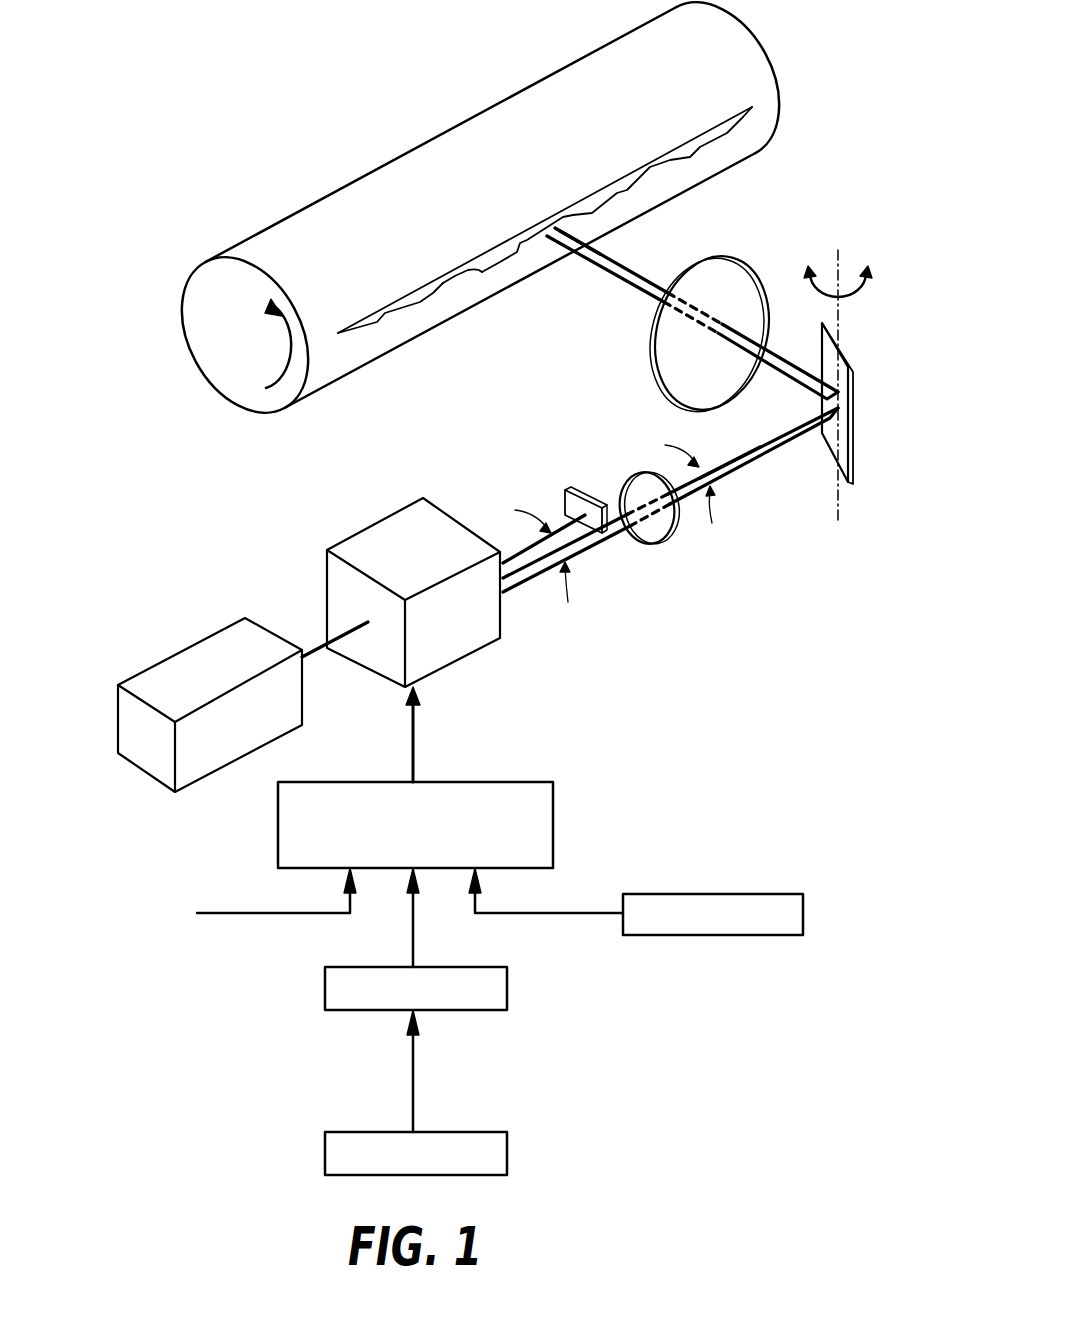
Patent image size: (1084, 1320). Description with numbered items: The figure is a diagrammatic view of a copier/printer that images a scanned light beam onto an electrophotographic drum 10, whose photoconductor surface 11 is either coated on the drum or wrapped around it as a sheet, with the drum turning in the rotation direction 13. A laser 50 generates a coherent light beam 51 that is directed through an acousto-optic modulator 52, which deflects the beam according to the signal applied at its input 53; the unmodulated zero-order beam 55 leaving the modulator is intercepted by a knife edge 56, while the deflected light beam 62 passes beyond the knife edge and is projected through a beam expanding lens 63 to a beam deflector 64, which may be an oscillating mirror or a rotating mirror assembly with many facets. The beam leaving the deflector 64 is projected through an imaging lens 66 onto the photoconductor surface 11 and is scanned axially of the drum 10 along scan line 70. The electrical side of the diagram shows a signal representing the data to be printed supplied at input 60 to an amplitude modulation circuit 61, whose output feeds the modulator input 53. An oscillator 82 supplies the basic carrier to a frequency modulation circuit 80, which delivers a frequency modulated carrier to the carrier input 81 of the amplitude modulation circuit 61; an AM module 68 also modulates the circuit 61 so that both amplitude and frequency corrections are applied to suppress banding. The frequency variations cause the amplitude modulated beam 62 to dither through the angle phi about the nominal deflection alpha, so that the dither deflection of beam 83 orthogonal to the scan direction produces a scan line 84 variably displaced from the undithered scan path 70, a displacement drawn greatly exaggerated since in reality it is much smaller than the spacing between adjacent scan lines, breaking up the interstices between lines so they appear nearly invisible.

The electrophotographic drum 10 is at (188, 277).
The photoconductor surface 11 is at (498, 113).
The rotation direction 13 is at (287, 362).
The scan line 70 is at (412, 293).
The scan line 84 is at (483, 272).
The beam 83 is at (612, 272).
The deflected light beam 62 is at (627, 268).
The imaging lens 66 is at (733, 262).
The beam deflector 64 is at (855, 420).
The oscillator 82 is at (733, 467).
The beam expanding lens 63 is at (637, 470).
The knife edge 56 is at (570, 488).
The zero-order beam 55 is at (508, 560).
The acousto-optic modulator 52 is at (387, 530).
The coherent light beam 51 is at (312, 650).
The laser 50 is at (180, 655).
The input 53 is at (415, 737).
The amplitude modulation circuit 61 is at (553, 823).
The input 60 is at (260, 912).
The carrier input 81 is at (413, 953).
The AM module 68 is at (805, 913).
The frequency modulation circuit 80 is at (507, 990).